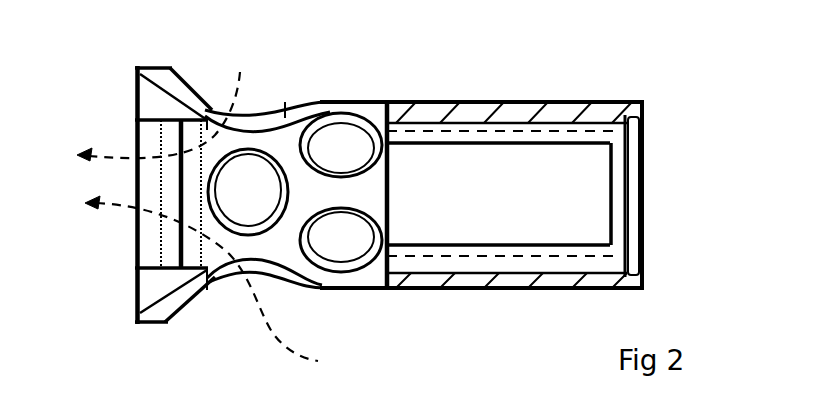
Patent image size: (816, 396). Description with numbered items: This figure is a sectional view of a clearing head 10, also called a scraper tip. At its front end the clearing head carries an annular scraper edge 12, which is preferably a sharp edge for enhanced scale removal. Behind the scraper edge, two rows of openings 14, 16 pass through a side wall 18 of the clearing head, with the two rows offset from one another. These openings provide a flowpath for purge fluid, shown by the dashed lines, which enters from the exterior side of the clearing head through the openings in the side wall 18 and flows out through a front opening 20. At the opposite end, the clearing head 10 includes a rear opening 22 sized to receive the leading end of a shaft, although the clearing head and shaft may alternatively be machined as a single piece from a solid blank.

The clearing head 10 is at (477, 90).
The annular scraper edge 12 is at (136, 67).
The openings 14 is at (251, 180).
The openings 16 is at (343, 133).
The side wall 18 is at (417, 104).
The front opening 20 is at (168, 216).
The rear opening 22 is at (633, 184).